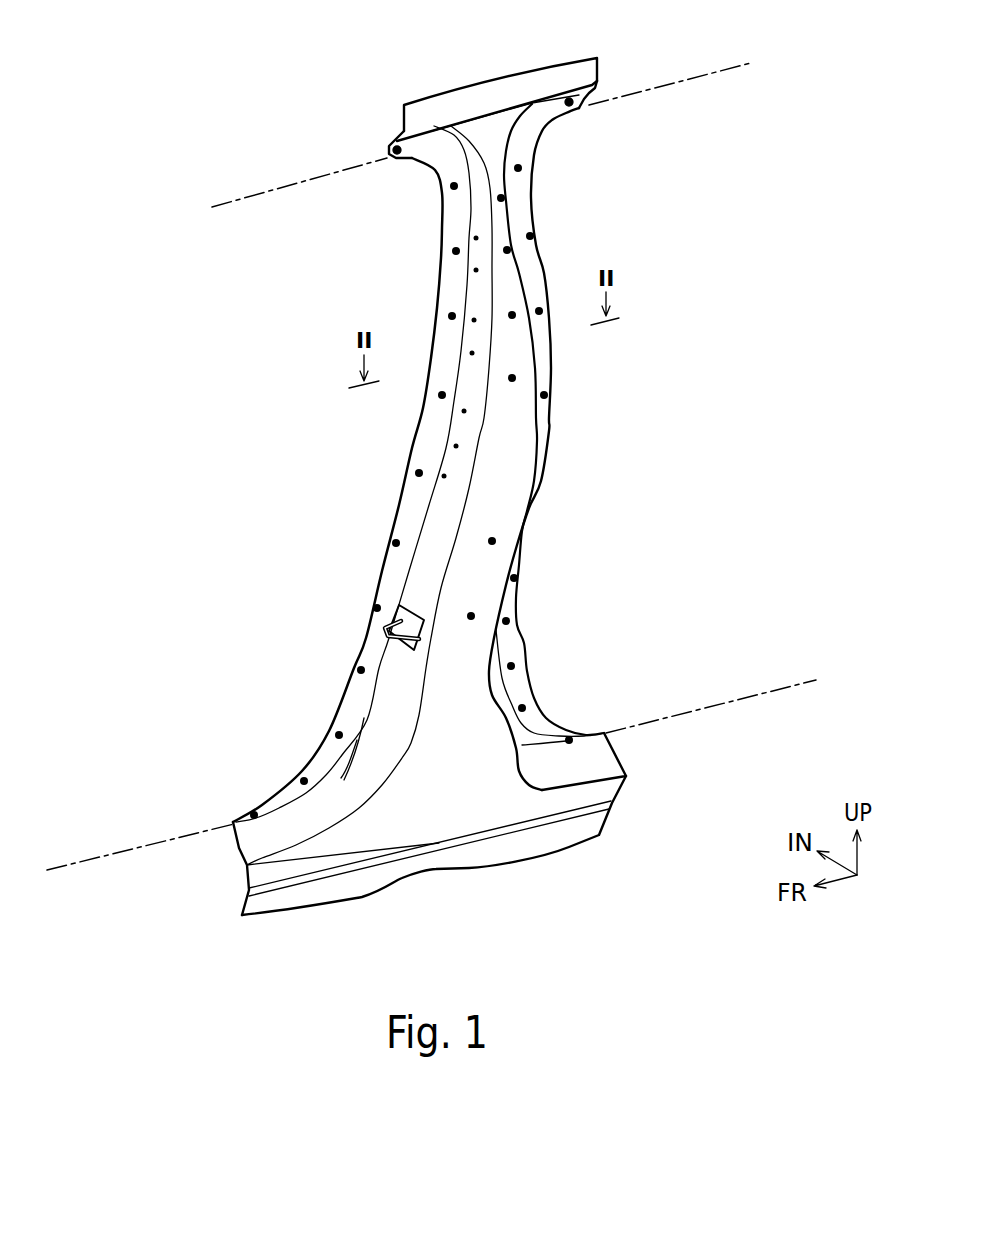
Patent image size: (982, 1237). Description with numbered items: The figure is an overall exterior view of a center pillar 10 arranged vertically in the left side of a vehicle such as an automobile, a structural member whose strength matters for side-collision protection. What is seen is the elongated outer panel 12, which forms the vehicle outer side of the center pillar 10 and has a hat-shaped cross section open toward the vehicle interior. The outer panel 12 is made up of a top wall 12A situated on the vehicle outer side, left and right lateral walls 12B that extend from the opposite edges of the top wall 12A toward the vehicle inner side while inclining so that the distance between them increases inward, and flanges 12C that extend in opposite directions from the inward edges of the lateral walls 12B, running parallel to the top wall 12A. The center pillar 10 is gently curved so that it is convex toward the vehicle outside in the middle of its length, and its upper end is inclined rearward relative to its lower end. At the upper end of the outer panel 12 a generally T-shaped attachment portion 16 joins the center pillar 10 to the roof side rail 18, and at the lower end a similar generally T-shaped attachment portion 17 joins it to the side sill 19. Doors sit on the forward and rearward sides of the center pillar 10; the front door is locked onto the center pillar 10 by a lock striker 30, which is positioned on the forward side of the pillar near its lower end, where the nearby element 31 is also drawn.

The center pillar 10 is at (760, 370).
The outer panel 12 is at (528, 456).
The top wall 12A is at (500, 515).
The lateral walls 12B is at (497, 692).
The flanges 12C is at (537, 260).
The attachment portion 16 is at (491, 135).
The attachment portion 17 is at (465, 792).
The roof side rail 18 is at (668, 87).
The side sill 19 is at (735, 697).
The lock striker 30 is at (387, 637).
The patch member 31 is at (412, 617).